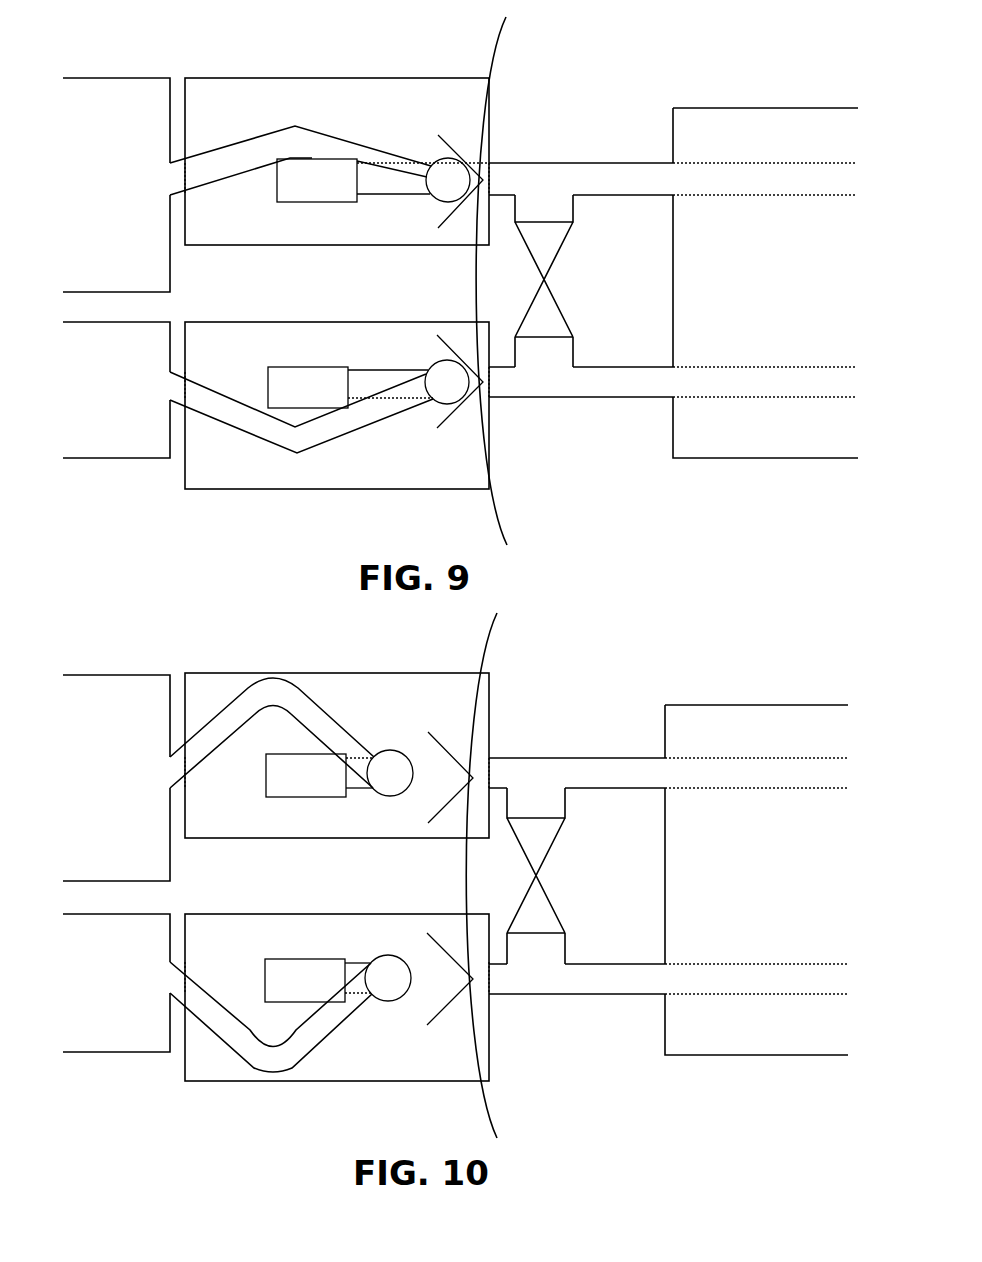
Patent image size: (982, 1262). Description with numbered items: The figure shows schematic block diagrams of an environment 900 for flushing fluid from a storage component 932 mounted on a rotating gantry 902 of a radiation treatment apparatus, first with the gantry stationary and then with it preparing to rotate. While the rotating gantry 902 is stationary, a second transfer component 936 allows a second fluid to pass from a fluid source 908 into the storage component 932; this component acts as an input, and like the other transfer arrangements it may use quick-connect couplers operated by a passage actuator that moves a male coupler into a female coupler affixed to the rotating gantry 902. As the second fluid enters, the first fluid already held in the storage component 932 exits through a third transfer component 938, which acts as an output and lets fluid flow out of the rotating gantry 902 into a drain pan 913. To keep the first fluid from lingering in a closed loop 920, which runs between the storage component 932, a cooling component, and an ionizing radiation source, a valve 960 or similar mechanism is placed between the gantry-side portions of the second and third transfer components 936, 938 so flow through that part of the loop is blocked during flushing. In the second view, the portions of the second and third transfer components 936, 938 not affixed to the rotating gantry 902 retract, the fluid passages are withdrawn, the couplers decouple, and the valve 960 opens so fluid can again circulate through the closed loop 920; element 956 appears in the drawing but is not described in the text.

In FIG. 9, the environment 900 is at (166, 38).
In FIG. 9, the rotating gantry 902 is at (483, 472).
In FIG. 10, the rotating gantry 902 is at (469, 710).
In FIG. 9, the fluid source 908 is at (93, 292).
In FIG. 10, the fluid source 908 is at (116, 778).
In FIG. 9, the drain pan 913 is at (100, 458).
In FIG. 10, the drain pan 913 is at (116, 983).
In FIG. 9, the closed loop 920 is at (568, 163).
In FIG. 10, the closed loop 920 is at (557, 758).
In FIG. 9, the storage component 932 is at (760, 108).
In FIG. 10, the storage component 932 is at (756, 880).
In FIG. 9, the second transfer component 936 is at (307, 78).
In FIG. 10, the second transfer component 936 is at (329, 733).
In FIG. 9, the third transfer component 938 is at (272, 488).
In FIG. 10, the third transfer component 938 is at (262, 1081).
In FIG. 10, the one-way valve 956 is at (450, 731).
In FIG. 9, the valve 960 is at (545, 280).
In FIG. 10, the valve 960 is at (535, 875).